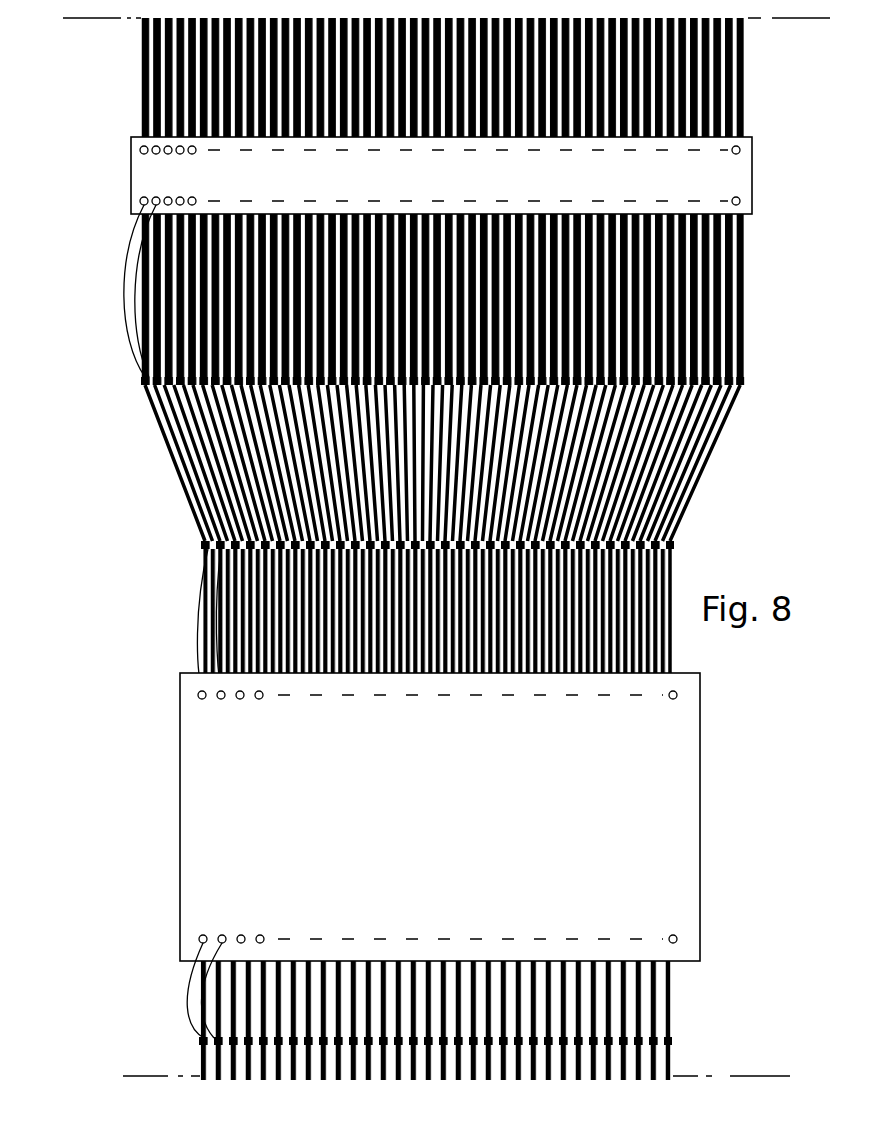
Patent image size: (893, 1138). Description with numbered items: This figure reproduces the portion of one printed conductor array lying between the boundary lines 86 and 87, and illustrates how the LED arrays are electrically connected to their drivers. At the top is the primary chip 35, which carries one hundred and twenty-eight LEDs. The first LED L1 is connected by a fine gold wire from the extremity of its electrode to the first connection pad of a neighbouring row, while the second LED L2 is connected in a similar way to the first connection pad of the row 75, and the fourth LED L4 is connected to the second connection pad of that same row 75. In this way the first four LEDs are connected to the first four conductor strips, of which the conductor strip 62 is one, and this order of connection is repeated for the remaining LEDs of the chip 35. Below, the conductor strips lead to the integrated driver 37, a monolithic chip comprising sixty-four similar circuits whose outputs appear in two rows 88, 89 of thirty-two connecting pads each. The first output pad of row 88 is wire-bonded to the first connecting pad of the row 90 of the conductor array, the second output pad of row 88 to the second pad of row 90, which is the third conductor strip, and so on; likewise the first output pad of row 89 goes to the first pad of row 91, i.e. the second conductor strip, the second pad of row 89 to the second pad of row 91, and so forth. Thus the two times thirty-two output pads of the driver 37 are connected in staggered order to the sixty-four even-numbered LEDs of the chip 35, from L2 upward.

The chip 35 is at (435, 179).
The integrated driver 37 is at (415, 817).
The conductor strip 62 is at (167, 462).
The row of connection pads 75 is at (133, 375).
The line 86 is at (786, 10).
The line 87 is at (722, 1068).
The row of output connecting pads 88 is at (191, 684).
The row of output connecting pads 89 is at (193, 928).
The row of connecting pads 90 is at (196, 537).
The row of connecting pads 91 is at (193, 1033).
The first LED L1 is at (132, 142).
The second LED L2 is at (132, 193).
The fourth LED L4 is at (148, 189).